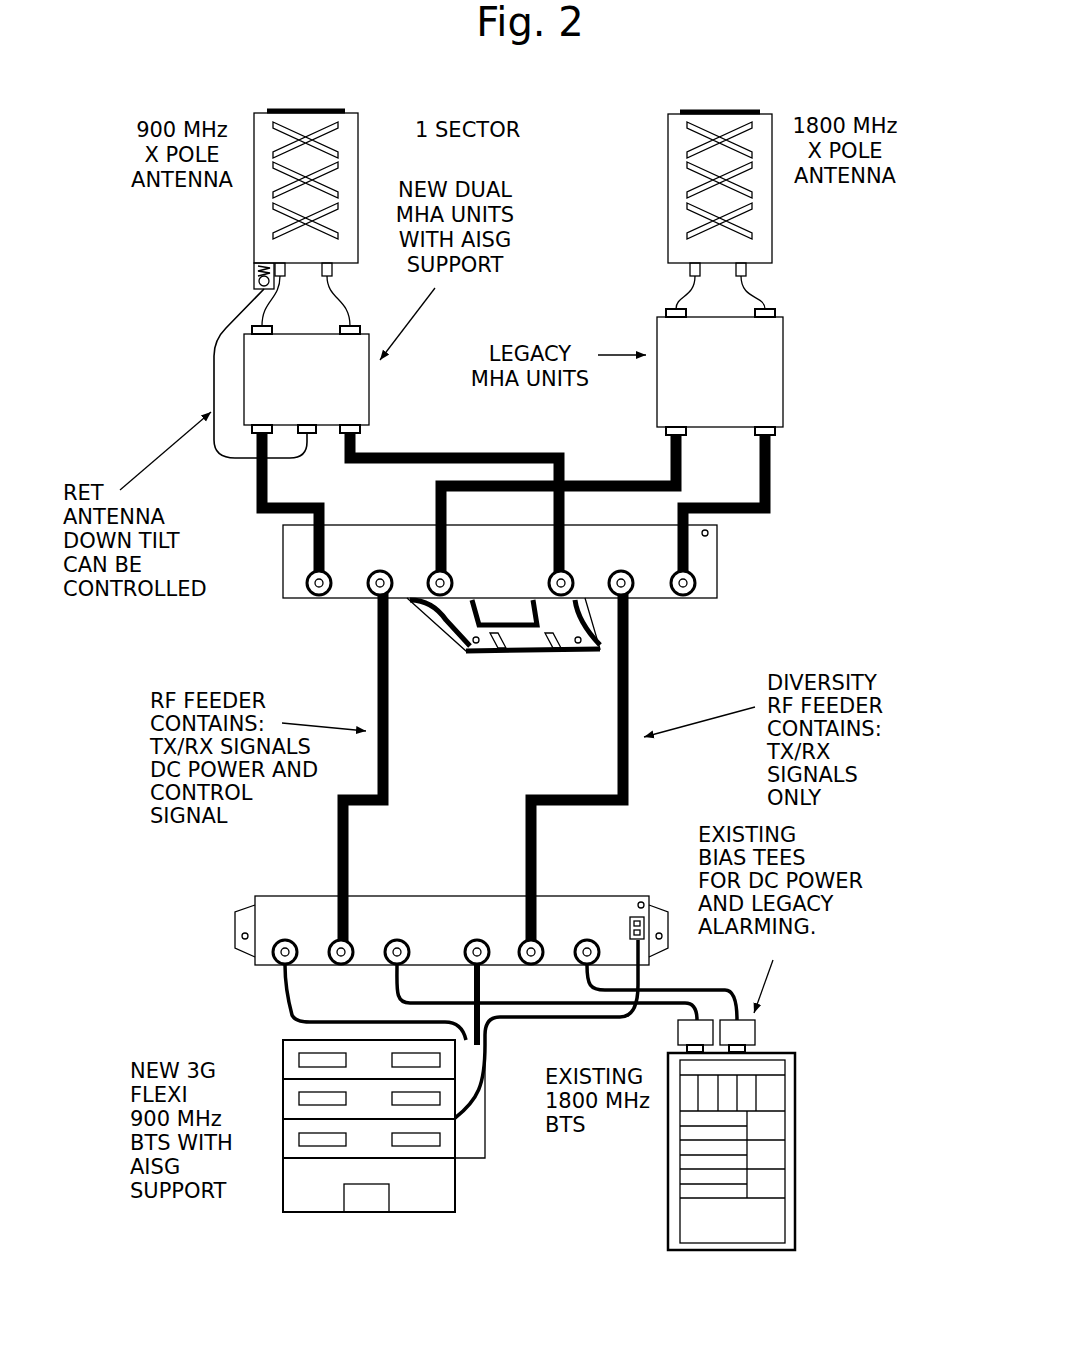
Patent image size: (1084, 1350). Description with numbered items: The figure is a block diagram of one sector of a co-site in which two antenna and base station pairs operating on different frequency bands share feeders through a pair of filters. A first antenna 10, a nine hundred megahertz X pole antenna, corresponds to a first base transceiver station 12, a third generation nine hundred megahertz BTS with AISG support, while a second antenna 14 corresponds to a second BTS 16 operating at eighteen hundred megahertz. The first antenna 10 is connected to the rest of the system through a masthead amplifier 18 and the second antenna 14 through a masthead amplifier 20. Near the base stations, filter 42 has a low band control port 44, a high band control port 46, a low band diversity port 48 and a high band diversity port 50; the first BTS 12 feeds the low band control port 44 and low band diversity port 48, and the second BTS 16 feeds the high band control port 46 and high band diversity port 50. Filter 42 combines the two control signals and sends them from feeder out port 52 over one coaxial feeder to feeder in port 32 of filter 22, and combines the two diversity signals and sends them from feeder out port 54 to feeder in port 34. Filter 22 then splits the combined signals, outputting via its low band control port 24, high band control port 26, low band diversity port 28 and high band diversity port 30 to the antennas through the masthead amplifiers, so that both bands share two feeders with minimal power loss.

The first antenna 10 is at (328, 108).
The first base transceiver station 12 is at (372, 1212).
The second antenna 14 is at (735, 108).
The second base transceiver station 16 is at (667, 1200).
The masthead amplifier 18 is at (370, 396).
The masthead amplifier 20 is at (783, 374).
The filter 22 is at (717, 557).
The low band control port 24 is at (312, 591).
The high band control port 26 is at (429, 589).
The low band diversity port 28 is at (573, 591).
The high band diversity port 30 is at (697, 583).
The feeder in port 32 is at (371, 594).
The feeder in port 34 is at (633, 587).
The filter 42 is at (255, 897).
The low band control port 44 is at (270, 968).
The high band control port 46 is at (412, 943).
The low band diversity port 48 is at (487, 943).
The high band diversity port 50 is at (593, 943).
The feeder out port 52 is at (341, 967).
The feeder out port 54 is at (540, 943).